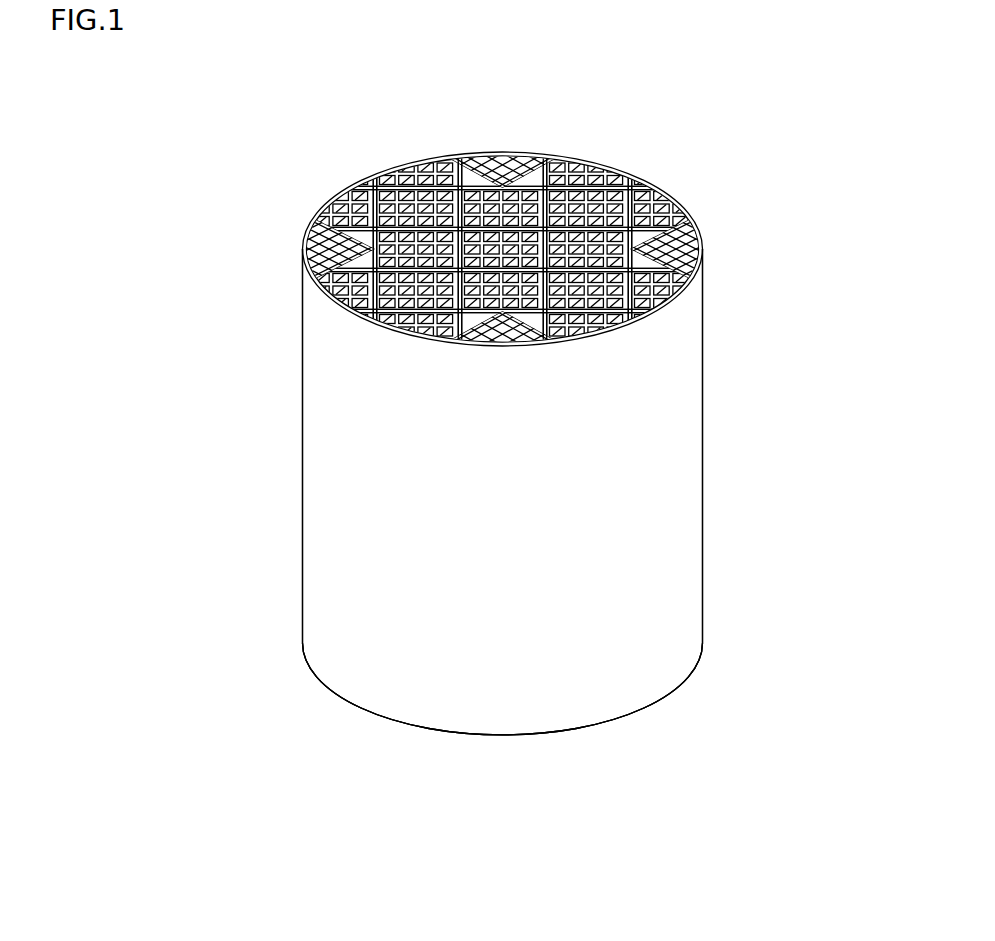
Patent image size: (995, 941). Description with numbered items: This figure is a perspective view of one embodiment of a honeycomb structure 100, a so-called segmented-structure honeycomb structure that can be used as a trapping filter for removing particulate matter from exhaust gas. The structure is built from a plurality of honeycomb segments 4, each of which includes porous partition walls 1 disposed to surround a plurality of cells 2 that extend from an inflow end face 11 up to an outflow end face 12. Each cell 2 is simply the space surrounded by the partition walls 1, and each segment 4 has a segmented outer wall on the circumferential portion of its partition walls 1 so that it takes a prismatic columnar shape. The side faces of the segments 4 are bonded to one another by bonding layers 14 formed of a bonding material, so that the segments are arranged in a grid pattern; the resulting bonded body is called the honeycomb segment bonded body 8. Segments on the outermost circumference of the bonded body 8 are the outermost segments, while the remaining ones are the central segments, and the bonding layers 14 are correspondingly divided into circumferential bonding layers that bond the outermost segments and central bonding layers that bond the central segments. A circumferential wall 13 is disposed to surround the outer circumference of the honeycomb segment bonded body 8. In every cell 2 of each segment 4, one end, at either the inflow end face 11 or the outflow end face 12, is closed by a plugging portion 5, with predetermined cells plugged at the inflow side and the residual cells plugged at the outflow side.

The honeycomb structure 100 is at (808, 58).
The partition wall 1 is at (588, 210).
The cell 2 is at (627, 195).
The honeycomb segment 4 is at (300, 262).
The plugging portion 5 is at (533, 218).
The honeycomb segment bonded body 8 is at (662, 193).
The inflow end face 11 is at (358, 148).
The outflow end face 12 is at (338, 706).
The circumferential wall 13 is at (652, 363).
The bonding layer 14 is at (315, 214).